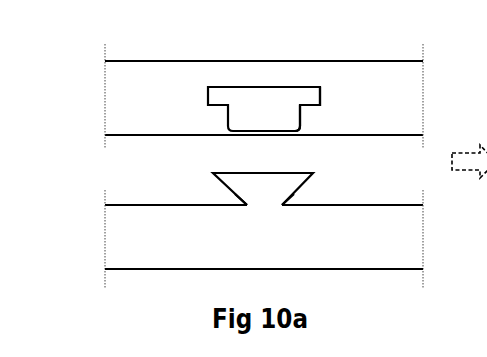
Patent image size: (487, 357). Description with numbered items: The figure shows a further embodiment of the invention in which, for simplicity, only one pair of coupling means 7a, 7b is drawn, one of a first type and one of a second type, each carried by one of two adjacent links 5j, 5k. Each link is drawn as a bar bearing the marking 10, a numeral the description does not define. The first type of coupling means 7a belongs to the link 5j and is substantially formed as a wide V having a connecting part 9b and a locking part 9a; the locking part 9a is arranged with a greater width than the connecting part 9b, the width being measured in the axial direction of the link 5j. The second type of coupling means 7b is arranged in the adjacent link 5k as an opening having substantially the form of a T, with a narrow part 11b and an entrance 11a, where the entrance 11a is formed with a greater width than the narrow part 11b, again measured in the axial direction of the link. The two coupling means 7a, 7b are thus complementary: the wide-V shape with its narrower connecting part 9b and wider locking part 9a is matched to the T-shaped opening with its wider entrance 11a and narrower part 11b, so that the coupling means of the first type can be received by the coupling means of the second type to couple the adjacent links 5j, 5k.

The profile rail 10 is at (176, 112).
The link 5k is at (99, 106).
The link 5j is at (99, 238).
The coupling means of a first type 7a is at (272, 82).
The entrance 11a is at (320, 95).
The narrow part 11b is at (301, 117).
The coupling means of a second type 7b is at (300, 193).
The locking part 9a is at (248, 170).
The connecting part 9b is at (261, 205).